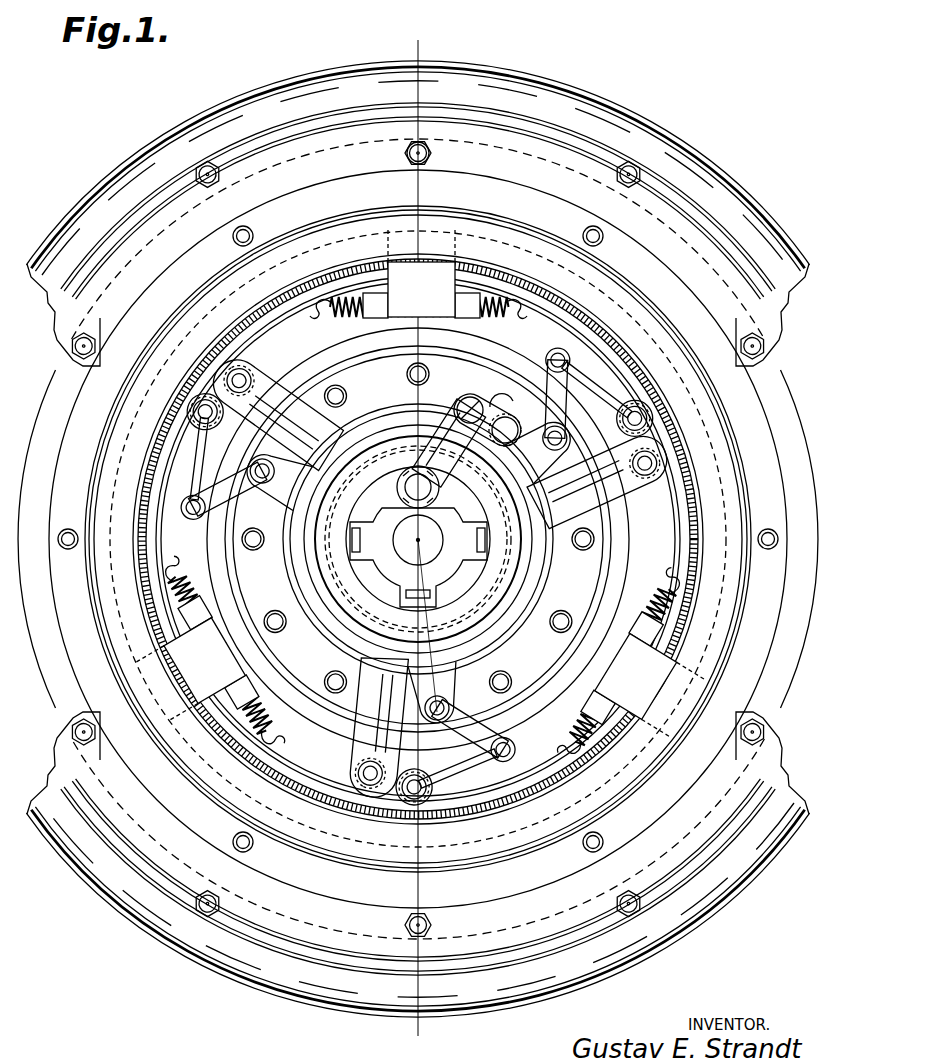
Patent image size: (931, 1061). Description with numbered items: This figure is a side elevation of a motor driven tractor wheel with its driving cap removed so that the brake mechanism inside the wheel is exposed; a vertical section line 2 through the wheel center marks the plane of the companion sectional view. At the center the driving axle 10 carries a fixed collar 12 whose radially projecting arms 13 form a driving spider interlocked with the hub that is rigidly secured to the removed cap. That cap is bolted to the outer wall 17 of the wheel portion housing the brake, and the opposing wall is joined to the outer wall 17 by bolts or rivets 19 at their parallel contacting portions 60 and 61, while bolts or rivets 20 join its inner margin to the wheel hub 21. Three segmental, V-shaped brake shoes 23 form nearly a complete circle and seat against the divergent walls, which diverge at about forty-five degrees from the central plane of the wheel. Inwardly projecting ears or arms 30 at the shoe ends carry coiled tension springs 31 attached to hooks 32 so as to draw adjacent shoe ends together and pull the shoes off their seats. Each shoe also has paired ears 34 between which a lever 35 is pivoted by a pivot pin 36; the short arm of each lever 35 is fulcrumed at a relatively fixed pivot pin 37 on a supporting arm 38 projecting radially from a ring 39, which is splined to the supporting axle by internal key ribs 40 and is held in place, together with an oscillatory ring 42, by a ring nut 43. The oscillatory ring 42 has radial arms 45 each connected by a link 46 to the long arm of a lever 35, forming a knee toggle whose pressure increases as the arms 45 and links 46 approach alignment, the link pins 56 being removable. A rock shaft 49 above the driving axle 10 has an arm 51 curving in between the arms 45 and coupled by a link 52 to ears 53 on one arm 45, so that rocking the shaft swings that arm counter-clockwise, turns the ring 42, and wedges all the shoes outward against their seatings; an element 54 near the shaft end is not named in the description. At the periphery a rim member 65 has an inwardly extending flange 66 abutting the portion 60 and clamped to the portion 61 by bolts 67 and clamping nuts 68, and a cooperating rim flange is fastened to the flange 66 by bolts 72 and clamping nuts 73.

The section line 2- 2 is at (422, 46).
The driving axle 10 is at (400, 537).
The fixed collar 12 is at (418, 557).
The radially projecting arms 13 is at (367, 561).
The outer wall 17 is at (150, 541).
The bolts or rivets 19 is at (254, 234).
The bolts or rivets 20 is at (342, 392).
The wheel hub 21 is at (327, 643).
The brake shoes 23 is at (200, 379).
The ears or arms 30 is at (376, 316).
The coiled tension springs 31 is at (631, 676).
The hooks 32 is at (312, 312).
The paired ears 34 is at (220, 422).
The lever 35 is at (193, 477).
The pivot pin 36 is at (206, 426).
The pivot pin 37 is at (243, 368).
The supporting arm 38 is at (275, 383).
The ring 39 is at (370, 424).
The internal key ribs 40 is at (350, 490).
The oscillatory ring 42 is at (308, 558).
The ring nut 43 is at (320, 573).
The radial arms 45 is at (300, 478).
The link 46 is at (240, 486).
The oscillatory shaft 49 is at (432, 500).
The arm 51 is at (433, 430).
The link 52 is at (482, 396).
The ears 53 is at (511, 418).
The sleeve 54 is at (446, 491).
The link pins 56 is at (265, 486).
The parallel contacting portion 60 is at (418, 534).
The parallel contacting portion 61 is at (784, 386).
The rim member 65 is at (417, 539).
The inwardly extending flange 66 is at (418, 539).
The bolts 67 is at (432, 153).
The clamping nuts 68 is at (406, 150).
The bolts 72 is at (221, 168).
The clamping nuts 73 is at (205, 181).